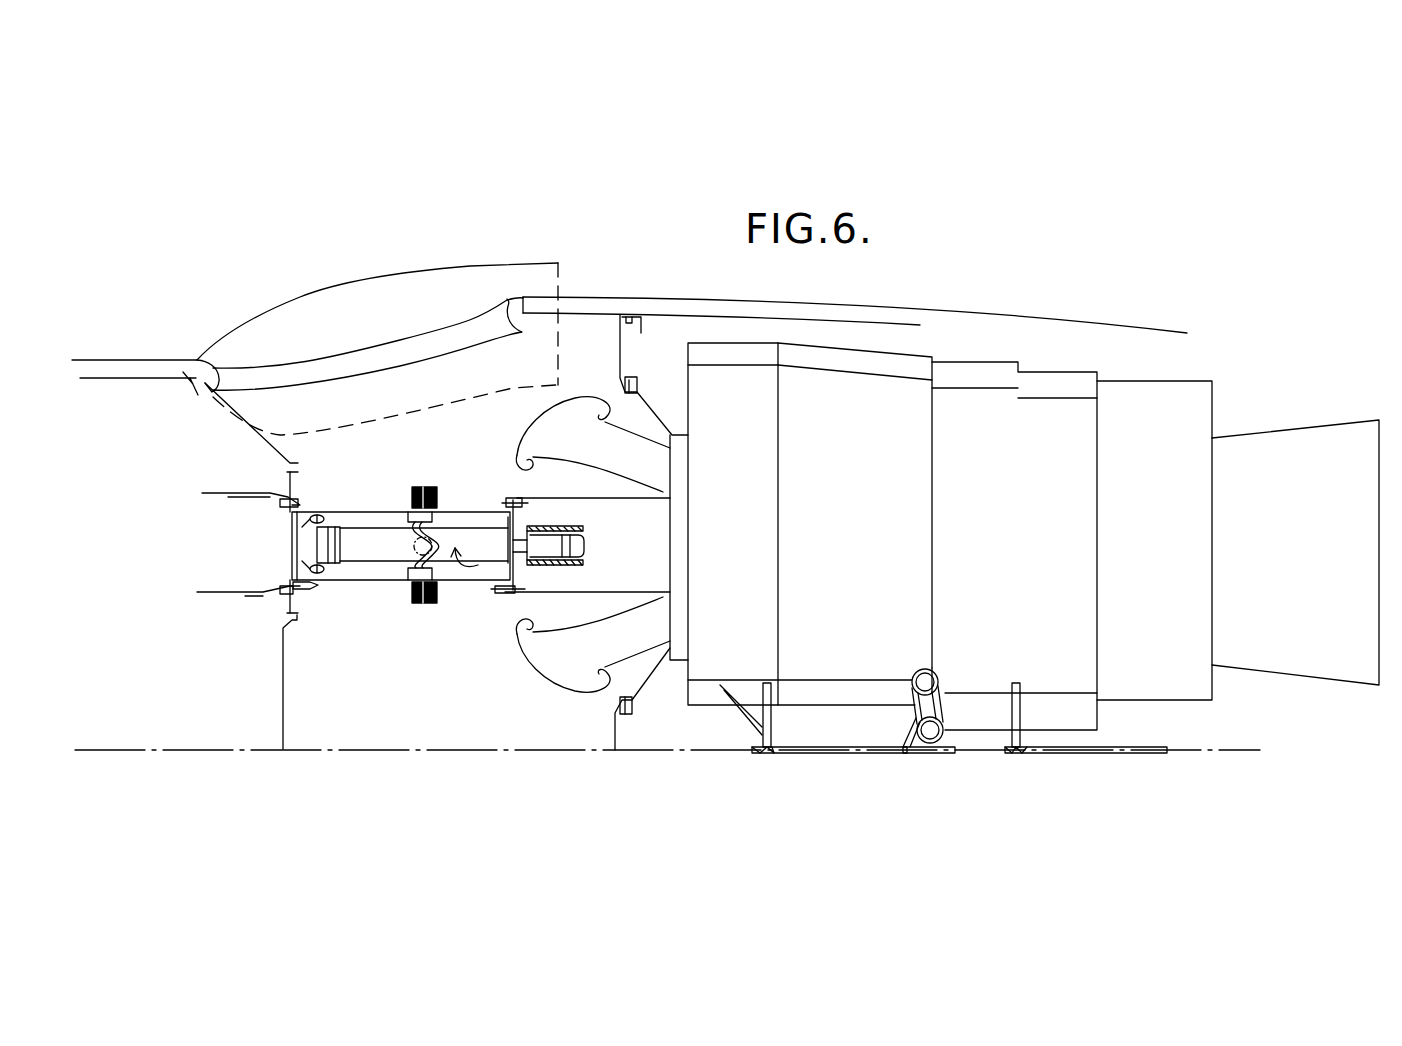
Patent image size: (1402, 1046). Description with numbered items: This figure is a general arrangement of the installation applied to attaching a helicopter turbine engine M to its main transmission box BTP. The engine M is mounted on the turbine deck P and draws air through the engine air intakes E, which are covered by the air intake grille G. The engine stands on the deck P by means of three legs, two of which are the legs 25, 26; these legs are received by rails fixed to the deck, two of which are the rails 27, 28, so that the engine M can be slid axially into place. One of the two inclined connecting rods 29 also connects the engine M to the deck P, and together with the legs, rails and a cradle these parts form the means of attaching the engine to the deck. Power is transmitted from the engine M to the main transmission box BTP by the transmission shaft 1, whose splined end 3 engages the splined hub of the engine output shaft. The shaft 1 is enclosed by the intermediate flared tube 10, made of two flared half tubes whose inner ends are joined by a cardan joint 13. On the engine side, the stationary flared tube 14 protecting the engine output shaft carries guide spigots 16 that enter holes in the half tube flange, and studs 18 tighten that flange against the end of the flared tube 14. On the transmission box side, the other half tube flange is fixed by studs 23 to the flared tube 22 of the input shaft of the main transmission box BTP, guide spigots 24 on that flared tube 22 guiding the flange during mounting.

The transmission shaft 1 is at (467, 522).
The splined end 3 is at (548, 548).
The intermediate flared tube 10 is at (385, 582).
The cardan joint 13 is at (415, 537).
The flared tube 14 is at (580, 594).
The guide spigot 16 is at (504, 592).
The stud 18 is at (511, 499).
The flared tube 22 is at (222, 592).
The stud 23 is at (303, 500).
The guide spigot 24 is at (300, 592).
The leg 25 is at (768, 753).
The leg 26 is at (1014, 752).
The rail 27 is at (845, 753).
The rail 28 is at (1100, 753).
The inclined connecting rod 29 is at (915, 720).
The air intake grille G is at (405, 268).
The engine air intakes E is at (535, 423).
The turbine engine M is at (866, 549).
The turbine deck P is at (1240, 750).
The main transmission box BTP is at (152, 557).